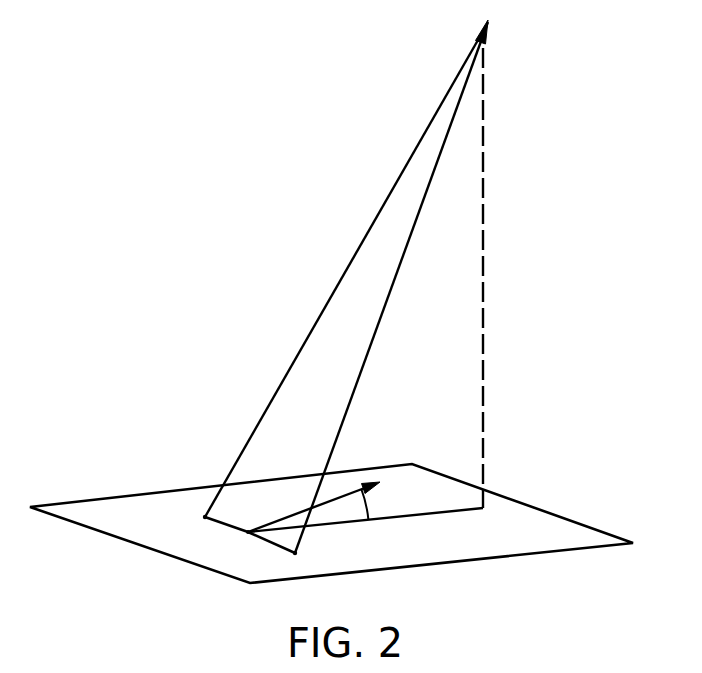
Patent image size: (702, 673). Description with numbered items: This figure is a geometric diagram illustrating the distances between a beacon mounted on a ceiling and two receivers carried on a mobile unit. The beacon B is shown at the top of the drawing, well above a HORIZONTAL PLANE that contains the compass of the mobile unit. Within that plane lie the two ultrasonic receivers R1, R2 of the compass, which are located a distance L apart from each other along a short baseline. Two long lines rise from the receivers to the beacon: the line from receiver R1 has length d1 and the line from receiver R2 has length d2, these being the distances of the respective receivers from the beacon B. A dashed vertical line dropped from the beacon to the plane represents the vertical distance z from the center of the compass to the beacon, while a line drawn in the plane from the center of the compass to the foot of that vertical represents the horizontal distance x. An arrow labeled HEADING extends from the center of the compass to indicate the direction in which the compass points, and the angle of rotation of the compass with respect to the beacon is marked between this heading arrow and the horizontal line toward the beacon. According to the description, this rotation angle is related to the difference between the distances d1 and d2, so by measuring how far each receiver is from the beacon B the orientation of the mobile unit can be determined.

The beacon B is at (462, 34).
The distance of receiver R1 from beacon d1 is at (345, 271).
The distance of receiver R2 from beacon d2 is at (391, 287).
The vertical distance z is at (492, 278).
The horizontal distance x is at (365, 525).
The distance between receivers L is at (237, 546).
The first ultrasonic receiver R1 is at (289, 552).
The second ultrasonic receiver R2 is at (209, 516).
The heading HEADING is at (305, 512).
The horizontal plane HORIZONTAL PLANE is at (331, 535).